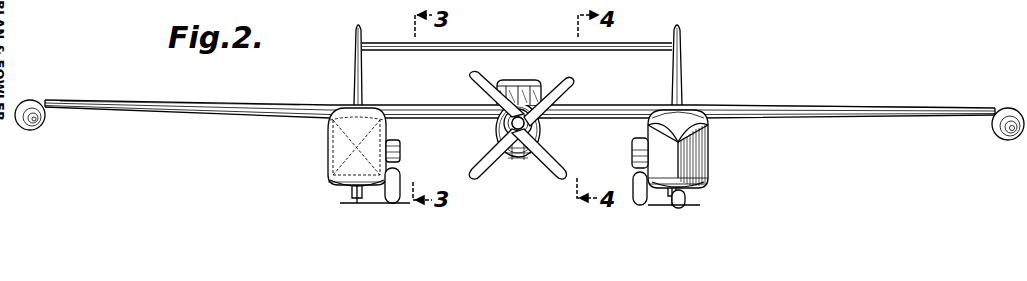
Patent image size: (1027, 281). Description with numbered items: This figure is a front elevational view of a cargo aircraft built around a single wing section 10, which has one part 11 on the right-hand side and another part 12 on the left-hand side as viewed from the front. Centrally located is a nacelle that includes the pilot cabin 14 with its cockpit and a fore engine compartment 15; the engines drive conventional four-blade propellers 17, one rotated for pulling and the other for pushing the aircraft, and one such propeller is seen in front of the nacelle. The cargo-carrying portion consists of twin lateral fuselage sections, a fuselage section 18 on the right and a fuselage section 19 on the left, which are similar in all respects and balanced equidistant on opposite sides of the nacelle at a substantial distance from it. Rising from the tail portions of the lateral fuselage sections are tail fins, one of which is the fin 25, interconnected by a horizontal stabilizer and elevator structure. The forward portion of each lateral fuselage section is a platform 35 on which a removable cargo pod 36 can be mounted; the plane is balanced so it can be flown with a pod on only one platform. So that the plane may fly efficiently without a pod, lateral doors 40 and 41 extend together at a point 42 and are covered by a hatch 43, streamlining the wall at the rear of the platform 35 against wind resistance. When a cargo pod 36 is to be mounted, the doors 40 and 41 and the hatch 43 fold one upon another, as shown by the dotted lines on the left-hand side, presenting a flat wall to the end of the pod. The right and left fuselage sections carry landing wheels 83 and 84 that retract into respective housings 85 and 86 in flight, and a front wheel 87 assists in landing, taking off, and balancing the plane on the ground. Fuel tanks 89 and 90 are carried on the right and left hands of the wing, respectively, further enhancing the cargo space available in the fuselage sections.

The wing section 10 is at (771, 104).
The right-hand wing part 11 is at (855, 118).
The left-hand wing part 12 is at (157, 110).
The pilot cabin 14 is at (515, 80).
The fore engine compartment 15 is at (542, 132).
The four-blade propeller 17 is at (474, 170).
The right lateral fuselage section 18 is at (708, 186).
The left lateral fuselage section 19 is at (327, 150).
The tail fin 25 is at (355, 75).
The platform 35 is at (708, 182).
The removable cargo pod 36 is at (330, 168).
The lateral door 40 is at (700, 147).
The lateral door 41 is at (657, 140).
The meeting point of doors 42 is at (680, 180).
The hatch 43 is at (686, 126).
The landing wheel 83 is at (633, 178).
The landing wheel 84 is at (398, 175).
The wheel housing 85 is at (633, 143).
The wheel housing 86 is at (400, 148).
The front wheel 87 is at (348, 194).
The fuel tank 89 is at (1000, 136).
The fuel tank 90 is at (38, 127).